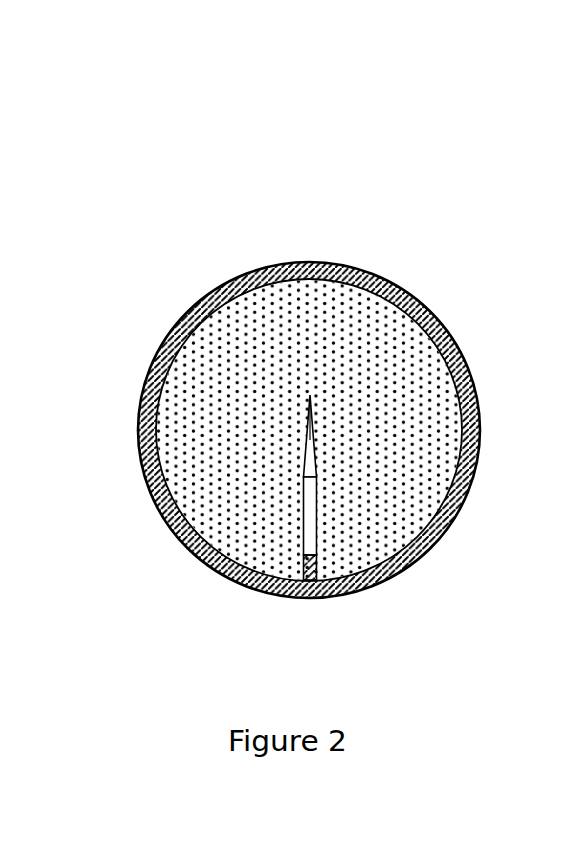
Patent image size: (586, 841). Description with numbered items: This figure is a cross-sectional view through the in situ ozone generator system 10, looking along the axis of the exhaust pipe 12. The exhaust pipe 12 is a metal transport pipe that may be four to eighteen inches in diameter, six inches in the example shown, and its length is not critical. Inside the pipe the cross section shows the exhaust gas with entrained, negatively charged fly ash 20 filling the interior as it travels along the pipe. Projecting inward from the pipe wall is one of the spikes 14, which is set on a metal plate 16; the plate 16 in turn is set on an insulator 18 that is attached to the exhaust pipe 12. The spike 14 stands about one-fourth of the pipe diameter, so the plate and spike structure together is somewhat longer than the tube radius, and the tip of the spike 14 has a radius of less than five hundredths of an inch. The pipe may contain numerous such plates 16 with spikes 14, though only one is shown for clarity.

The in situ ozone generator system 10 is at (443, 211).
The exhaust pipe 12 is at (299, 251).
The spike 14 is at (330, 421).
The plate 16 is at (329, 527).
The insulator 18 is at (326, 587).
The fly ash 20 is at (254, 359).